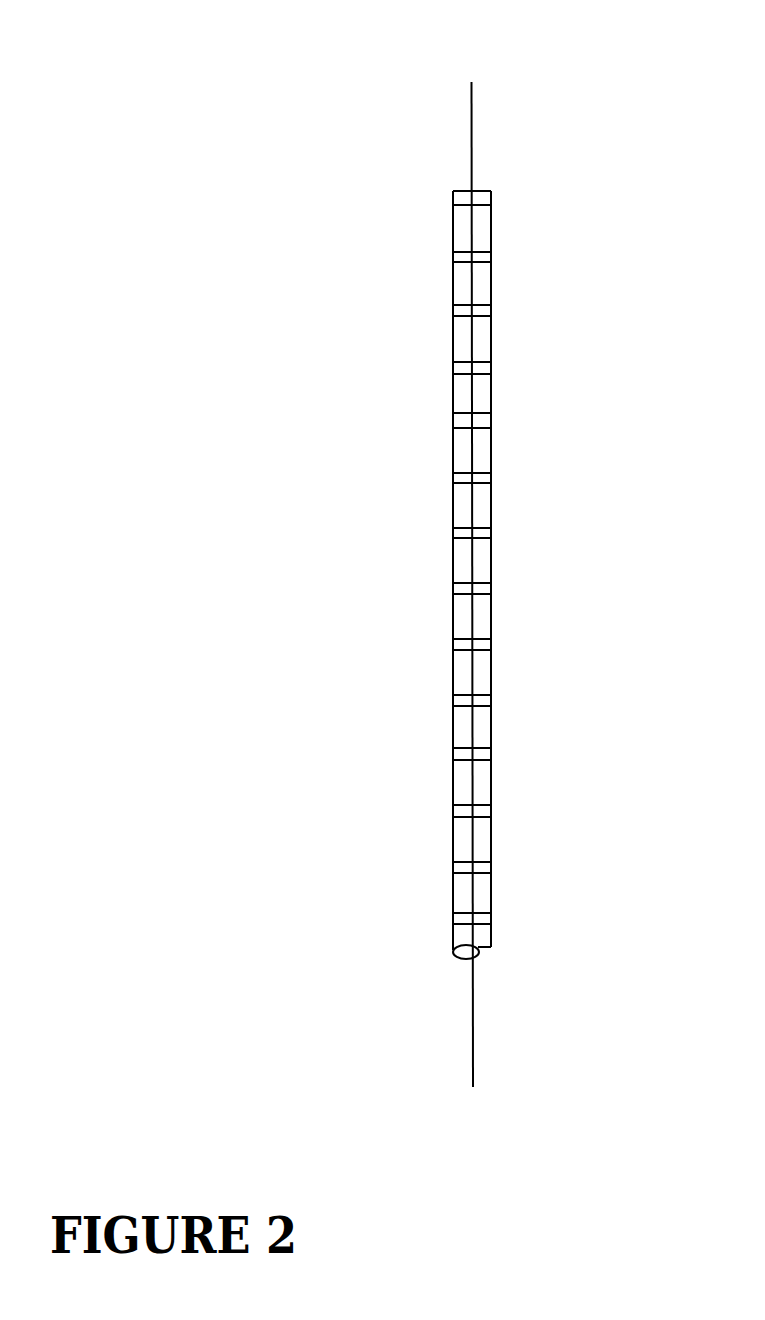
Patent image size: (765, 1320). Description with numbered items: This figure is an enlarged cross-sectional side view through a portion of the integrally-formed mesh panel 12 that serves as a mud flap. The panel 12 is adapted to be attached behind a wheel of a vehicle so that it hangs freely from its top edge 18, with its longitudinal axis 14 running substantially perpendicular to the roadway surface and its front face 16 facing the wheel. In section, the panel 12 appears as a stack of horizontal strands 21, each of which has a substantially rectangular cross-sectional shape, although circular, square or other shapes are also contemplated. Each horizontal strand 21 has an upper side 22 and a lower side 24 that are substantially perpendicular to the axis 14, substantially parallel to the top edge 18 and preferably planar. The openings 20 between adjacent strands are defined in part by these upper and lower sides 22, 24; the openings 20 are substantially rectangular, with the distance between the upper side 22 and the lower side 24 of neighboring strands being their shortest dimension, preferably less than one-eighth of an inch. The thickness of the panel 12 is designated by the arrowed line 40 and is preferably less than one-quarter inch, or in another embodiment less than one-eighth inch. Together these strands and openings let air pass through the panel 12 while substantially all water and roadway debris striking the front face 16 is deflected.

The mesh panel 12 is at (455, 549).
The longitudinal axis 14 is at (474, 130).
The front face 16 is at (450, 674).
The top edge 18 is at (452, 189).
The openings 20 is at (461, 330).
The horizontal strand 21 is at (459, 529).
The upper side 22 is at (462, 804).
The lower side 24 is at (467, 821).
The arrowed line 40 is at (456, 402).